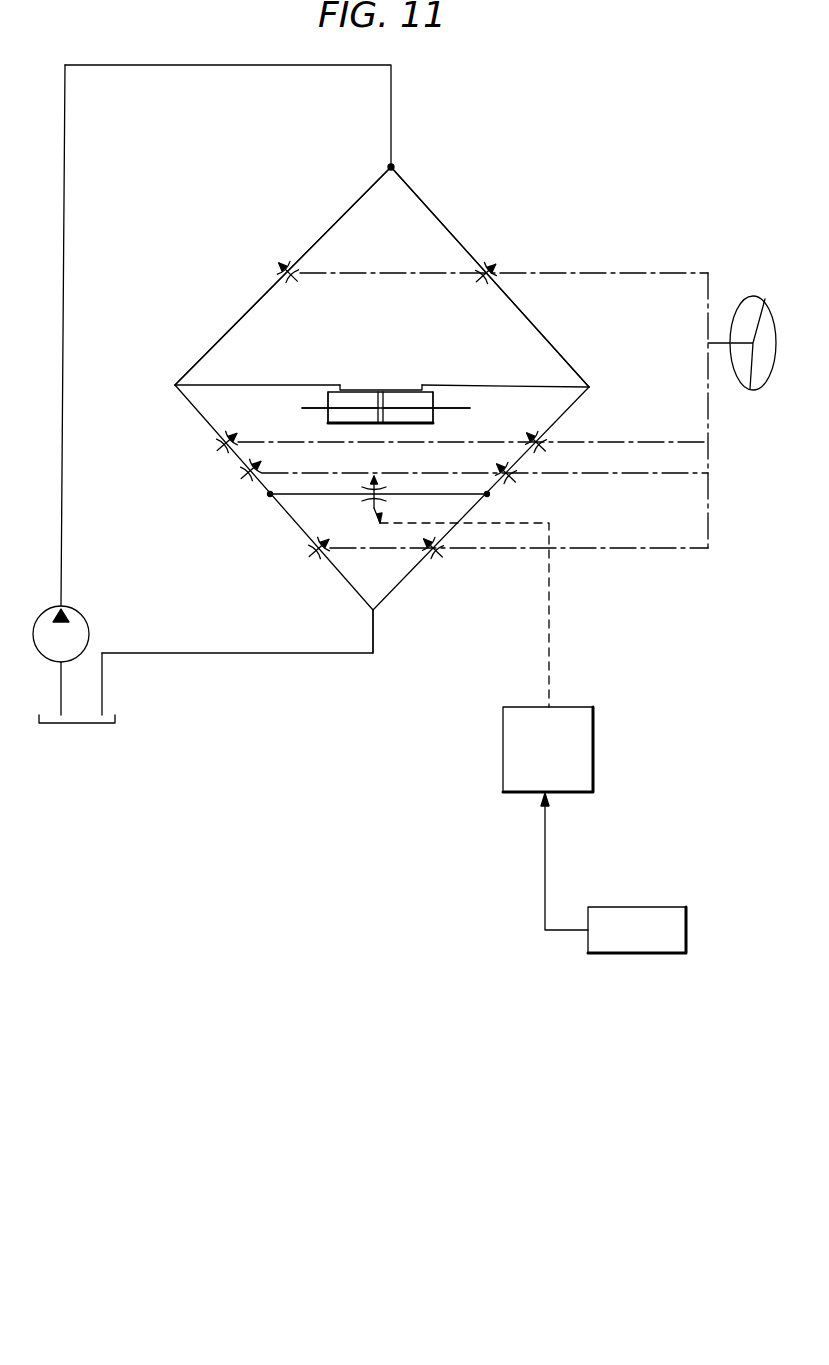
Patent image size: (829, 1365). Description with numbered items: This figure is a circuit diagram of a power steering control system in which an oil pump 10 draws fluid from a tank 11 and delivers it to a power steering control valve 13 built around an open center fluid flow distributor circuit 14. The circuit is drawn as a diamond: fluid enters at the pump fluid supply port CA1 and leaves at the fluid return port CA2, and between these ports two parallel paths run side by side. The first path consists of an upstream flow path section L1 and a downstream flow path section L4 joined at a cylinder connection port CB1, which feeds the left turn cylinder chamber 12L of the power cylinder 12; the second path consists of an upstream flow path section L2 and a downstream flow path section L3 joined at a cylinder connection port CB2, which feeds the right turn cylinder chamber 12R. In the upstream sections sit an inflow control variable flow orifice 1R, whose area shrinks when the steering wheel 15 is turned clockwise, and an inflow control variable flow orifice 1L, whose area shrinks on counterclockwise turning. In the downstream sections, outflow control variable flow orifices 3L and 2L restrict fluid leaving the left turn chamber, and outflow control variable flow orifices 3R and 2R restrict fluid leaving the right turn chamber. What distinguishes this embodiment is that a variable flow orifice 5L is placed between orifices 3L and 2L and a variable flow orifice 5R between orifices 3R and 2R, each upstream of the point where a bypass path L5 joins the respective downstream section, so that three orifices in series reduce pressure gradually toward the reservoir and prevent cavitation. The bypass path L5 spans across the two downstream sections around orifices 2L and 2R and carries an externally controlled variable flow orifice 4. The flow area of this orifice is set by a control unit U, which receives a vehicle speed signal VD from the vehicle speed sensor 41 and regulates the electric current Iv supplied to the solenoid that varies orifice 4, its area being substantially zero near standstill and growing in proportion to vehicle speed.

The oil pump 10 is at (89, 632).
The tank 11 is at (118, 723).
The power cylinder 12 is at (369, 389).
The left turn cylinder chamber 12L is at (328, 419).
The right turn cylinder chamber 12R is at (435, 418).
The power steering control valve 13 is at (249, 298).
The fluid flow distributor circuit 14 is at (466, 245).
The steering wheel 15 is at (750, 393).
The vehicle speed sensor 41 is at (634, 905).
The inflow control variable flow orifice of the first kind 1R is at (288, 257).
The inflow control variable flow orifice of the second kind 1L is at (491, 262).
The outflow control variable flow orifice 2L is at (319, 561).
The outflow control variable flow orifice 2R is at (434, 559).
The outflow control variable flow orifice 3L is at (236, 470).
The outflow control variable flow orifice 3R is at (522, 472).
The externally controlled variable flow orifice 4 is at (380, 490).
The variable flow orifice 5L is at (250, 501).
The variable flow orifice 5R is at (507, 501).
The upstream flow path section L1 is at (358, 200).
The upstream flow path section L2 is at (430, 208).
The downstream flow path section L3 is at (551, 428).
The downstream flow path section L4 is at (201, 418).
The bypass path L5 is at (332, 497).
The pump fluid supply port CA1 is at (410, 156).
The fluid return port CA2 is at (375, 612).
The cylinder connection port CB1 is at (175, 385).
The cylinder connection port CB2 is at (590, 387).
The control unit U is at (594, 756).
The control current signal Iv is at (474, 615).
The vehicle speed signal VD is at (564, 861).